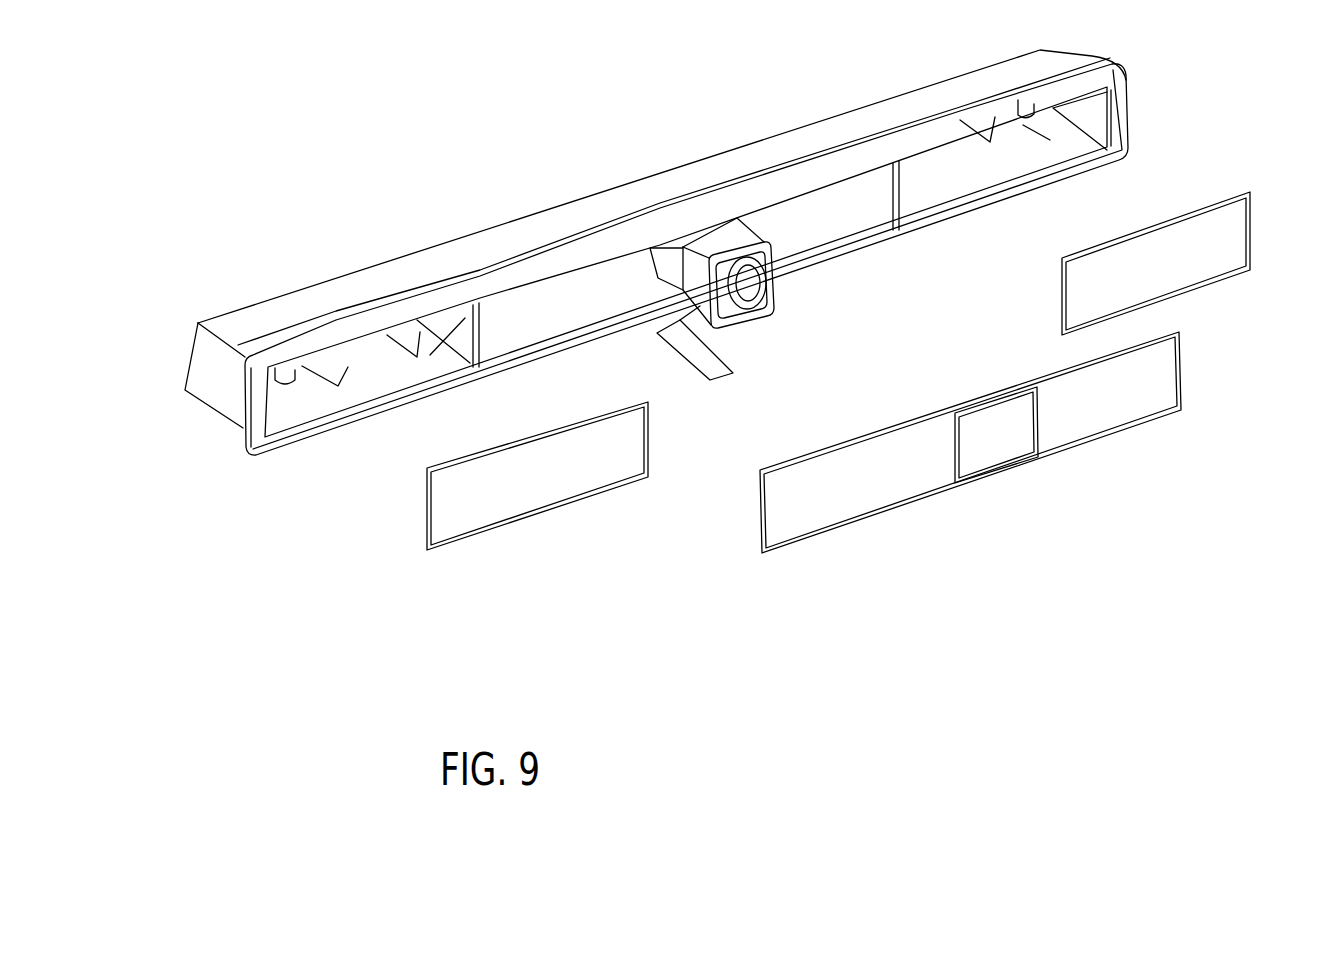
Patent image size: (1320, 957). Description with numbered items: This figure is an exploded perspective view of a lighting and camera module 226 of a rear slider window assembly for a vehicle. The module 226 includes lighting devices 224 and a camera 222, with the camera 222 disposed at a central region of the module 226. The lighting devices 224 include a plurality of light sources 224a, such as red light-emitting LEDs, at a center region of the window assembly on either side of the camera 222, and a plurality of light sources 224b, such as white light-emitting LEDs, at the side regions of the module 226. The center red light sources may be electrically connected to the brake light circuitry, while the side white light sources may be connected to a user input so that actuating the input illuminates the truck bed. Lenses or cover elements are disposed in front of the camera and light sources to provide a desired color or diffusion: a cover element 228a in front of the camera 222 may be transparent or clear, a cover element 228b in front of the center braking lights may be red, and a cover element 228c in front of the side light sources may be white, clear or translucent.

The camera 222 is at (728, 252).
The lighting devices 224 is at (656, 316).
The light sources 224a is at (813, 219).
The light sources 224b is at (346, 360).
The lighting and camera module 226 is at (656, 309).
The cover element 228a is at (998, 443).
The cover element 228b is at (837, 503).
The cover element 228c is at (548, 483).